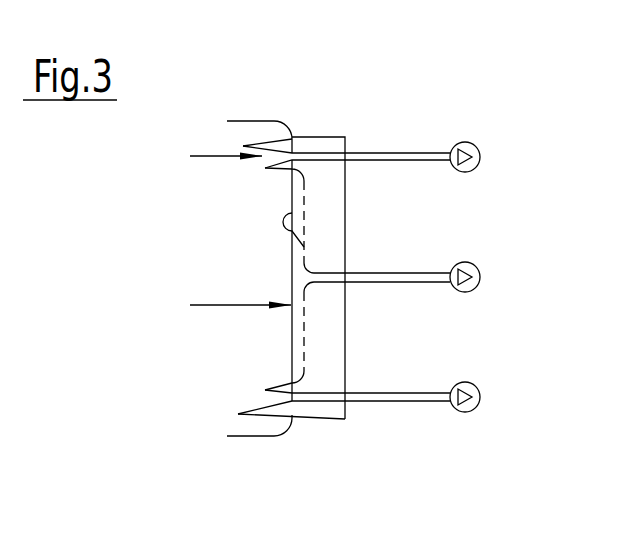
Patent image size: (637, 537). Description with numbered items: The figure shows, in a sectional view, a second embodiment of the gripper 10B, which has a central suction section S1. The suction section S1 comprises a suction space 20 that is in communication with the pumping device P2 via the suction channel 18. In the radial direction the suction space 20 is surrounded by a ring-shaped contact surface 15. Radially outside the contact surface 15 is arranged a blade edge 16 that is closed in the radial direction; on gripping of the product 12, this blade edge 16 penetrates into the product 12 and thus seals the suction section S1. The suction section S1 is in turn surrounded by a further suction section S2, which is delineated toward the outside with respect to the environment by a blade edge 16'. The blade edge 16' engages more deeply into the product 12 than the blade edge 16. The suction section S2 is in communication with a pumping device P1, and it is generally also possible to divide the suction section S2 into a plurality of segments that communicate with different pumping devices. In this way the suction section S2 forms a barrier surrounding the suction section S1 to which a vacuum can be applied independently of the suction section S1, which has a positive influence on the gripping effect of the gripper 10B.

The gripper 10B is at (462, 98).
The product 12 is at (240, 120).
The ring-shaped contact surface 15 is at (307, 347).
The blade edge 16 is at (223, 390).
The blade edge 16' is at (223, 424).
The suction channel 18 is at (398, 395).
The suction space 20 is at (288, 214).
The suction section S1 is at (222, 307).
The suction section S2 is at (301, 160).
The pumping device P1 is at (484, 263).
The pumping device P2 is at (484, 256).